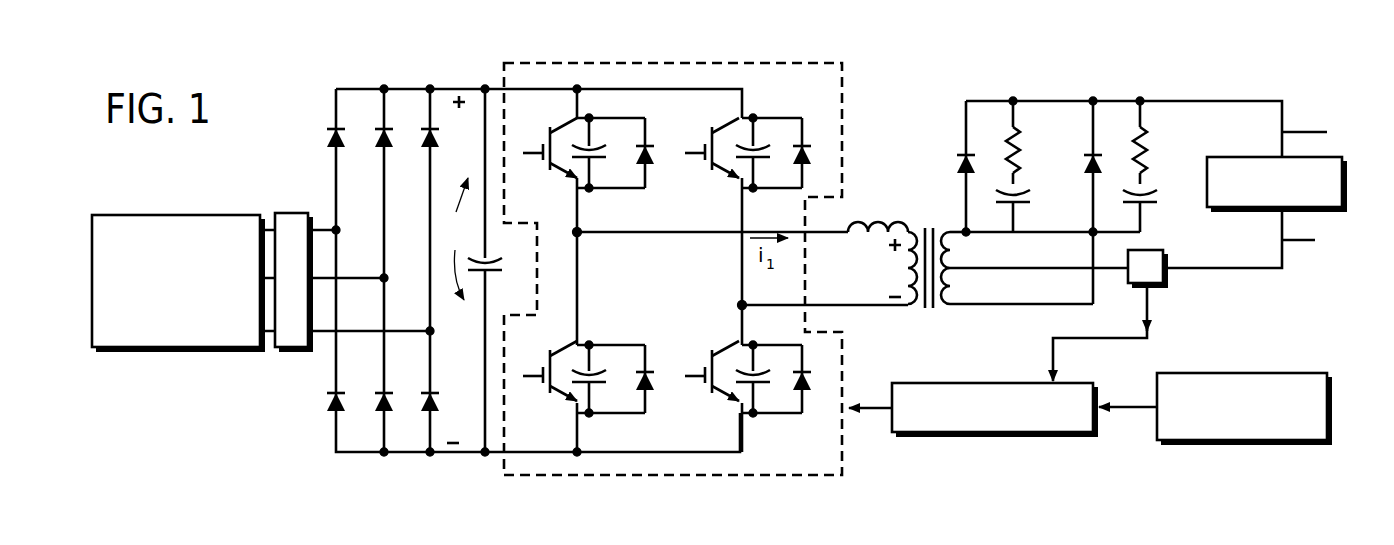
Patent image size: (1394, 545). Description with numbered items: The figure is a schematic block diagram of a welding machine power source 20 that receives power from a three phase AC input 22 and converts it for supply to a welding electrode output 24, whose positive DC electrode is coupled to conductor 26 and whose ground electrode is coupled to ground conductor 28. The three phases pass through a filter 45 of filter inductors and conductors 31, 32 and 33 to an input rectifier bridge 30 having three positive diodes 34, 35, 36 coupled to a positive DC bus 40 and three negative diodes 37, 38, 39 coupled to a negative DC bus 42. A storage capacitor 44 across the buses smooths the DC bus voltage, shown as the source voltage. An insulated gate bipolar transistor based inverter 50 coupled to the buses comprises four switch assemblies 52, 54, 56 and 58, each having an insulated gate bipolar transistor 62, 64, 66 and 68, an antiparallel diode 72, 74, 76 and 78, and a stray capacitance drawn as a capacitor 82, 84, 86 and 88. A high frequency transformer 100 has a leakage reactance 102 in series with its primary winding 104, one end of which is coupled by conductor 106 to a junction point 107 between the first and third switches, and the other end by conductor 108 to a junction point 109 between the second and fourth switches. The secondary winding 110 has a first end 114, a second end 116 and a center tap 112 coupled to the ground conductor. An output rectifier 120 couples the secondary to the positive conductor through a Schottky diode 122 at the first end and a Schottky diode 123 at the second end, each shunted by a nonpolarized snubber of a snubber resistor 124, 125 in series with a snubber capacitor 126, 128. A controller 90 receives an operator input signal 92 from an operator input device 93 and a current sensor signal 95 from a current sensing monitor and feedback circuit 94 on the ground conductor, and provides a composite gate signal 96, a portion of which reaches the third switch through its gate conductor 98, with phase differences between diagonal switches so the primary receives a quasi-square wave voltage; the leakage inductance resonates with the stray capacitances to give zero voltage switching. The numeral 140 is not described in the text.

The welding machine power source 20 is at (297, 512).
The three phase AC input 22 is at (148, 213).
The welding electrode output 24 is at (1339, 211).
The conductor 26 is at (1319, 132).
The ground conductor 28 is at (1090, 318).
The input rectifier bridge 30 is at (370, 80).
The input conductor 31 is at (334, 226).
The input conductor 32 is at (360, 276).
The input conductor 33 is at (412, 329).
The positive diode 34 is at (326, 138).
The positive diode 35 is at (382, 146).
The positive diode 36 is at (430, 146).
The negative diode 37 is at (328, 402).
The negative diode 38 is at (382, 410).
The negative diode 39 is at (429, 410).
The positive DC bus 40 is at (458, 86).
The negative DC bus 42 is at (455, 456).
The storage capacitor 44 is at (492, 274).
The filter 45 is at (282, 342).
The inverter 50 is at (570, 62).
The switch assembly 52 is at (613, 110).
The switch assembly 54 is at (782, 103).
The switch assembly 56 is at (561, 422).
The switch assembly 58 is at (721, 415).
The insulated gate bipolar transistor 62 is at (558, 192).
The insulated gate bipolar transistor 64 is at (720, 190).
The insulated gate bipolar transistor 66 is at (560, 335).
The insulated gate bipolar transistor 68 is at (724, 341).
The diode 72 is at (654, 152).
The diode 74 is at (813, 150).
The diode 76 is at (646, 392).
The diode 78 is at (817, 380).
The capacitor 82 is at (594, 165).
The capacitor 84 is at (758, 165).
The capacitor 86 is at (595, 388).
The capacitor 88 is at (761, 389).
The controller 90 is at (1045, 433).
The operator input signal 92 is at (1140, 410).
The operator input device 93 is at (1280, 441).
The current sensing monitor and feedback circuit 94 is at (1158, 274).
The current sensor signal 95 is at (1075, 341).
The composite gate signal 96 is at (875, 411).
The gate conductor 98 is at (532, 381).
The high frequency transformer 100 is at (927, 314).
The leakage reactance 102 is at (867, 236).
The primary winding 104 is at (908, 280).
The conductor 106 is at (757, 231).
The junction point 107 is at (581, 237).
The conductor 108 is at (758, 304).
The junction point 109 is at (738, 305).
The secondary winding 110 is at (952, 293).
The center tap 112 is at (1022, 268).
The first end 114 is at (963, 238).
The second end 116 is at (951, 310).
The output rectifier 120 is at (1099, 75).
The diode 122 is at (955, 174).
The diode 123 is at (1084, 160).
The snubber resistor 124 is at (1010, 130).
The snubber resistor 125 is at (1133, 129).
The snubber capacitor 126 is at (1023, 206).
The snubber capacitor 128 is at (1152, 206).
The leakage inductance 140 is at (1131, 540).